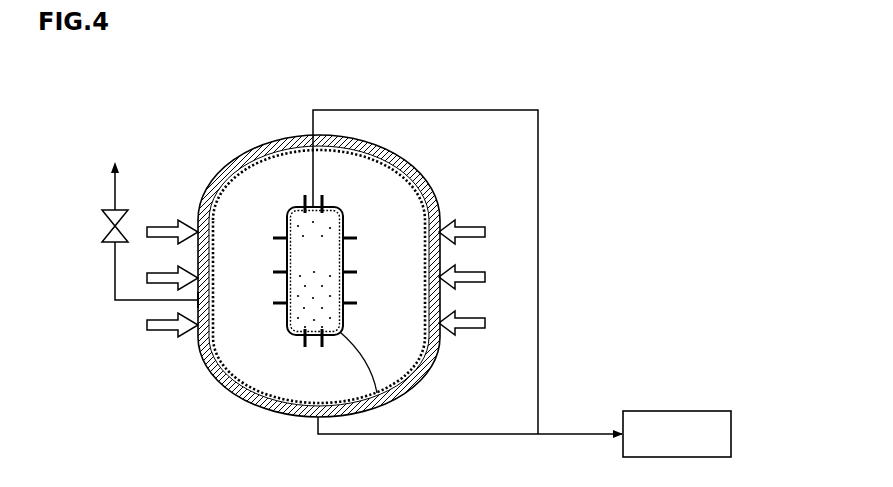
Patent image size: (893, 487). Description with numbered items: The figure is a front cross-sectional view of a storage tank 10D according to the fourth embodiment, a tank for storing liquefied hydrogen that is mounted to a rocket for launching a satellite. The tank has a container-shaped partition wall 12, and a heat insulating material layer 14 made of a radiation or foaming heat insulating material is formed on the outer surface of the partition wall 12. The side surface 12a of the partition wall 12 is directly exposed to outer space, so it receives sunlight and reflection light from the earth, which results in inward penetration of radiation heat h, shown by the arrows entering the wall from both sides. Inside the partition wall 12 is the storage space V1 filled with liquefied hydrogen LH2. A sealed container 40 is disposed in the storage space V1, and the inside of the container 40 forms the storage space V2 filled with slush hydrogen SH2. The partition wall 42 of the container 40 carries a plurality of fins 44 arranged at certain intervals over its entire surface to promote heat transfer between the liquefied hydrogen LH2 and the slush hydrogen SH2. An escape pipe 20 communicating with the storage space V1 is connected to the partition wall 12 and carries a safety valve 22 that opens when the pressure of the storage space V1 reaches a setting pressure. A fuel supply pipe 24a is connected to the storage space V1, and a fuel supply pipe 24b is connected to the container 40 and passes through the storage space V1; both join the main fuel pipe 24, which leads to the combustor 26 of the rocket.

The storage tank 10D is at (376, 91).
The partition wall 12 is at (395, 163).
The side surface 12a is at (197, 258).
The heat insulating material layer 14 is at (423, 182).
The escape pipe 20 is at (115, 268).
The safety valve 22 is at (106, 208).
The main fuel pipe 24 is at (573, 433).
The fuel supply pipe 24a is at (473, 433).
The fuel supply pipe 24b is at (490, 109).
The combustor 26 is at (672, 411).
The container 40 is at (289, 204).
The partition wall 42 is at (377, 400).
The fins 44 is at (283, 305).
The slush hydrogen SH2 is at (334, 265).
The liquefied hydrogen LH2 is at (334, 372).
The storage space V1 is at (277, 367).
The storage space V2 is at (285, 323).
The radiation heat h is at (475, 283).